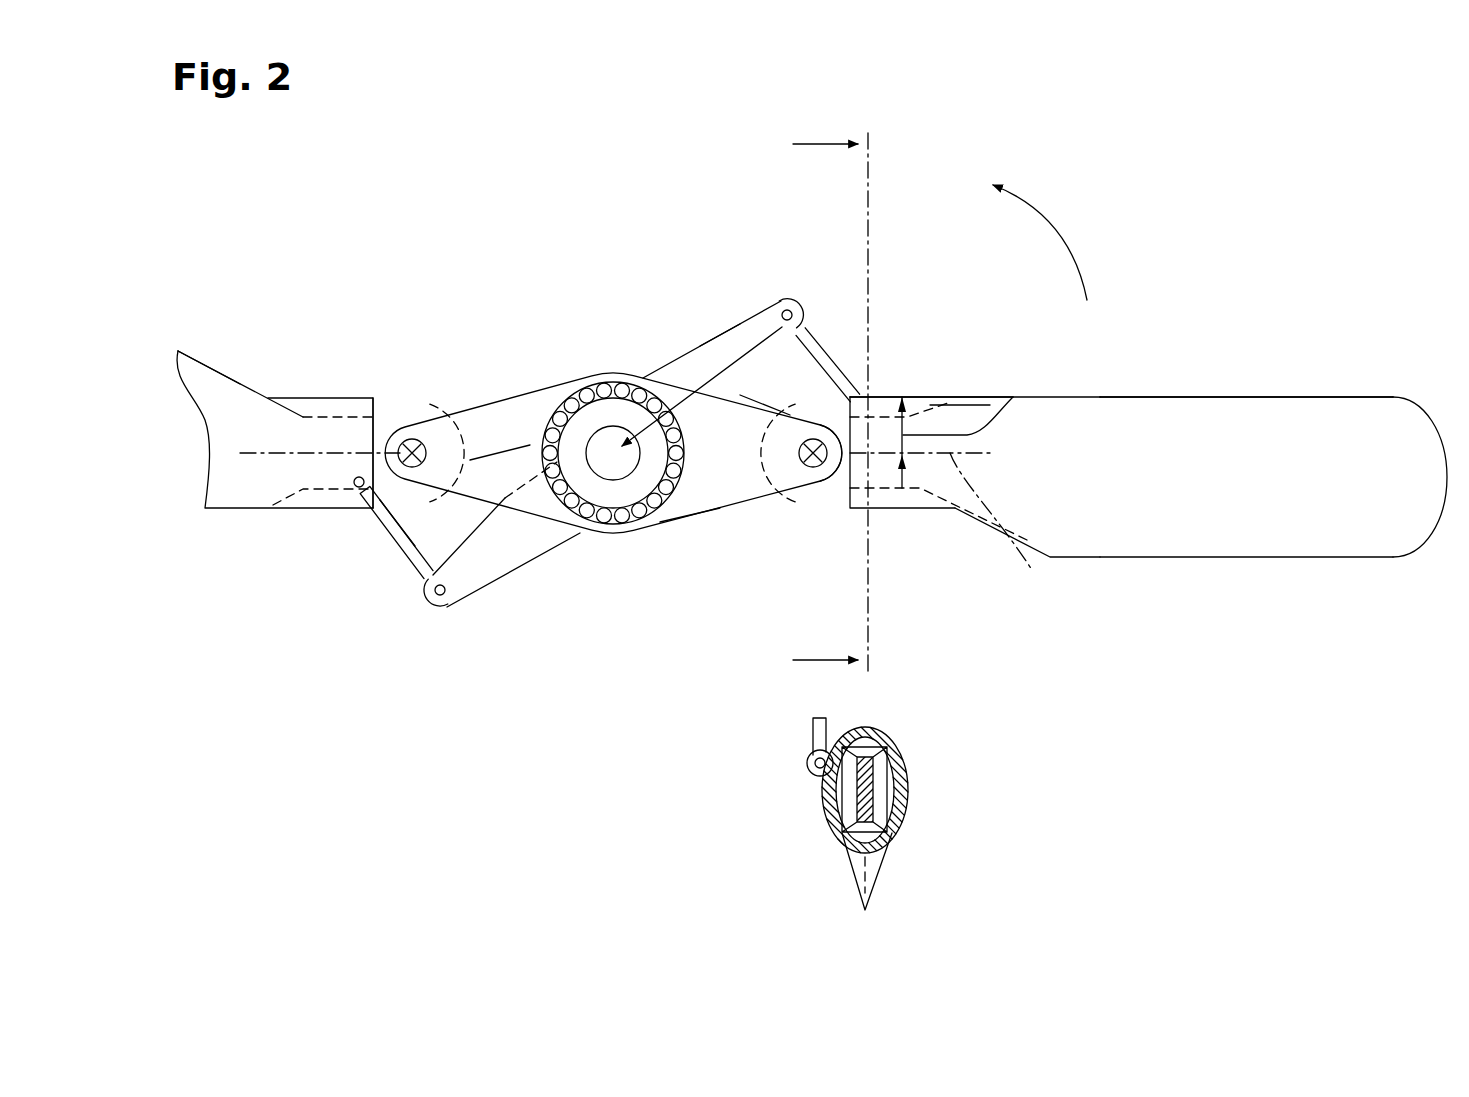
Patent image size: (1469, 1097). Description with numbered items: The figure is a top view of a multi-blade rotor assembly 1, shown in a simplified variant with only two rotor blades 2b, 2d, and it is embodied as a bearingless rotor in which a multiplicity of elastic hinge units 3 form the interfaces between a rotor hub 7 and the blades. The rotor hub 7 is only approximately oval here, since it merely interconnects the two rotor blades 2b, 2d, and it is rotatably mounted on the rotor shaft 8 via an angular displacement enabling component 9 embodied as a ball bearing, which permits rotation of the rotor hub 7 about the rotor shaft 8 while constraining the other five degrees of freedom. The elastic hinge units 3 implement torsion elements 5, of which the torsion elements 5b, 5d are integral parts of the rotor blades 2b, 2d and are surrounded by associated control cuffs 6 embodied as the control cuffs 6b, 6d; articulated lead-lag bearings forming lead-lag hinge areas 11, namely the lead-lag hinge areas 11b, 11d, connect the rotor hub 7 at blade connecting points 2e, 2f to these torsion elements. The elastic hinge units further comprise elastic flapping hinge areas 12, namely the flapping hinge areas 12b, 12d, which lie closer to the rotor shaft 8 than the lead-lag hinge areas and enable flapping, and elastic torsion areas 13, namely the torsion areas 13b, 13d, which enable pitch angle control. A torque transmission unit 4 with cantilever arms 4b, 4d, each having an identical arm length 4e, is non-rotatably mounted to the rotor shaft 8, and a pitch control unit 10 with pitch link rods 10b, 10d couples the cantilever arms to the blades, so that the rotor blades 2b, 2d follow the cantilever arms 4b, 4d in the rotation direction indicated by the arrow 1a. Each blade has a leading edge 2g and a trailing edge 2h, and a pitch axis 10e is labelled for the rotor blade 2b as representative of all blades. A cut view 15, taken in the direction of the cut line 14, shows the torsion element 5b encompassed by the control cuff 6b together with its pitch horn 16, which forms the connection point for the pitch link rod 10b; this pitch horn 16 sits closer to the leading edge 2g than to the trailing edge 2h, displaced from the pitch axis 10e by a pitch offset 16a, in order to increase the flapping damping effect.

The multi-blade rotor assembly 1 is at (1232, 208).
The arrow 1a is at (1059, 238).
The rotor blade 2b is at (1213, 435).
The rotor blade 2d is at (220, 422).
The blade connecting point 2e is at (775, 475).
The blade connecting point 2f is at (438, 437).
The leading edge 2g is at (1316, 396).
The trailing edge 2h is at (217, 359).
The elastic hinge units 3 is at (388, 381).
The torque transmission unit 4 is at (745, 299).
The cantilever arm 4b is at (722, 340).
The cantilever arm 4d is at (478, 571).
The arm length 4e is at (705, 363).
The torsion elements 5 is at (801, 498).
The torsion element 5b is at (838, 486).
The torsion element 5d is at (398, 440).
The control cuffs 6 is at (919, 387).
The control cuff 6b is at (925, 400).
The control cuff 6d is at (273, 506).
The rotor hub 7 is at (692, 506).
The rotor shaft 8 is at (620, 481).
The angular displacement enabling component 9 is at (594, 392).
The pitch control unit 10 is at (407, 580).
The pitch link rod 10b is at (820, 377).
The pitch link rod 10d is at (397, 561).
The pitch axis 10e is at (1031, 562).
The lead-lag hinge areas 11 is at (356, 490).
The lead-lag hinge area 11b is at (905, 395).
The lead-lag hinge area 11d is at (372, 440).
The elastic flapping hinge areas 12 is at (495, 391).
The elastic flapping hinge area 12b is at (746, 446).
The elastic flapping hinge area 12d is at (499, 461).
The elastic torsion areas 13 is at (905, 511).
The elastic torsion area 13b is at (928, 511).
The elastic torsion area 13d is at (300, 394).
The cut line 14 is at (811, 403).
The cut view 15 is at (904, 859).
The pitch horn 16 is at (807, 779).
The pitch offset 16a is at (955, 402).